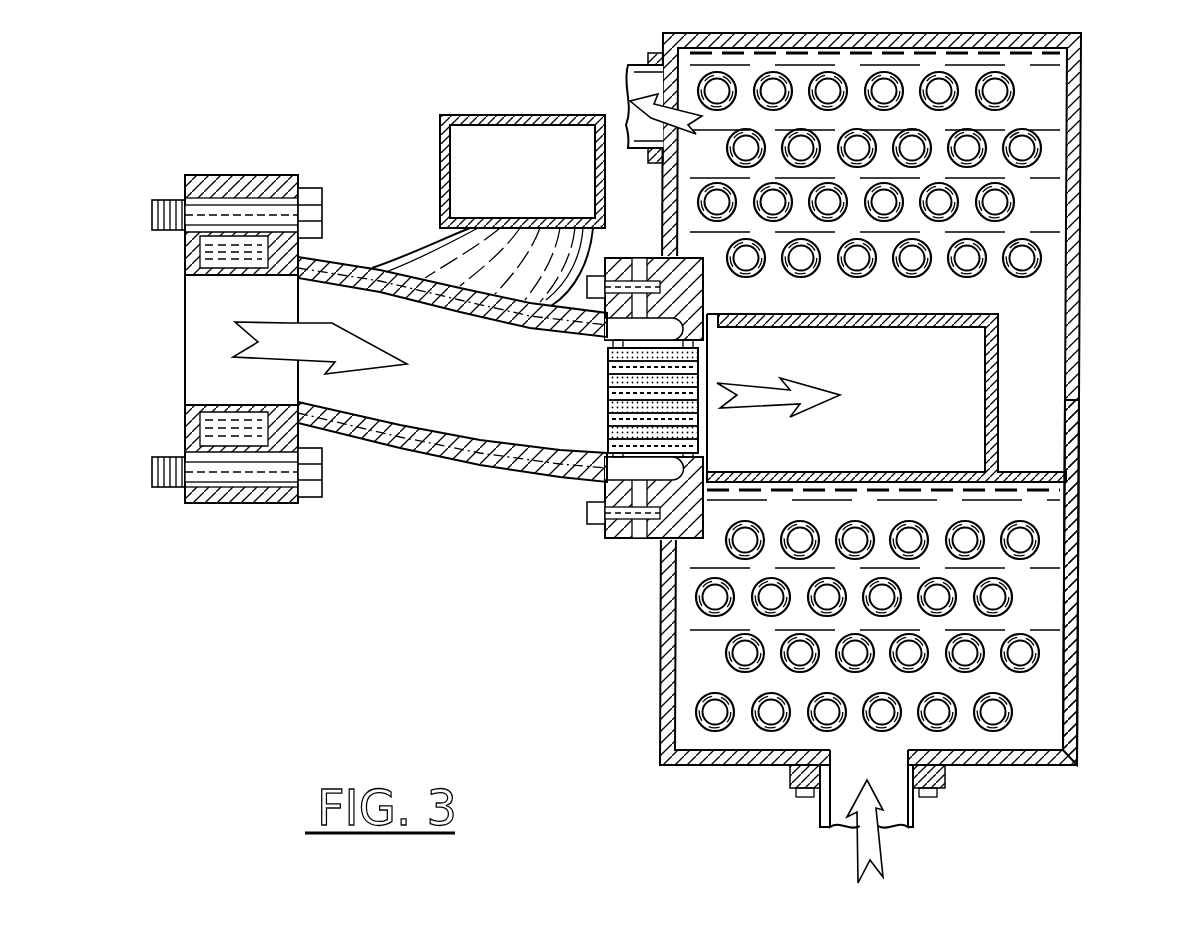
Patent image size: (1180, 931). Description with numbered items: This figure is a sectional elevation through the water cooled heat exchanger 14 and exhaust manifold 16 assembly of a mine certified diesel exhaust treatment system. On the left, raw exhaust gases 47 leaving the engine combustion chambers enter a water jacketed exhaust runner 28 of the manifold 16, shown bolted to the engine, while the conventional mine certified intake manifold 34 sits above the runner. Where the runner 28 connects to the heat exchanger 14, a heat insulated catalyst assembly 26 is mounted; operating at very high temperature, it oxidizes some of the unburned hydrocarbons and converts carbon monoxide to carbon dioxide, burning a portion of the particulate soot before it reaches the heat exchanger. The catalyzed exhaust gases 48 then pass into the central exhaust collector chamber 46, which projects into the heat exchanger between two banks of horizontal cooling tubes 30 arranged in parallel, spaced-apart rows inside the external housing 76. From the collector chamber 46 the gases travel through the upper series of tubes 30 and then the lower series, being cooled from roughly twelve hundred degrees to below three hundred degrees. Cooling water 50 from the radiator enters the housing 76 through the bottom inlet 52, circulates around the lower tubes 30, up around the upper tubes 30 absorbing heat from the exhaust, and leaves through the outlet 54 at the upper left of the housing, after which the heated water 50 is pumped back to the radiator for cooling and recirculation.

The exhaust gas heat exchanger 14 is at (1083, 106).
The exhaust manifold 16 is at (195, 503).
The heat insulated catalyst assembly 26 is at (605, 387).
The exhaust runner 28 is at (483, 468).
The cooling tube 30 is at (1014, 198).
The intake manifold 34 is at (580, 117).
The central exhaust collector chamber 46 is at (962, 428).
The raw exhaust gases 47 is at (242, 322).
The catalyzed exhaust gases 48 is at (831, 391).
The cooling water 50 is at (640, 93).
The bottom inlet 52 is at (820, 812).
The outlet 54 is at (643, 66).
The external housing 76 is at (1077, 680).